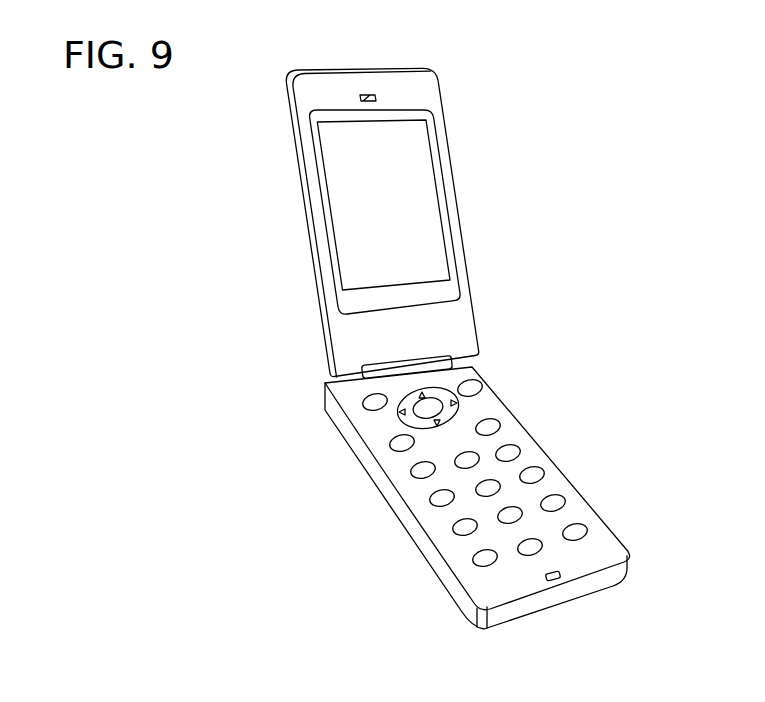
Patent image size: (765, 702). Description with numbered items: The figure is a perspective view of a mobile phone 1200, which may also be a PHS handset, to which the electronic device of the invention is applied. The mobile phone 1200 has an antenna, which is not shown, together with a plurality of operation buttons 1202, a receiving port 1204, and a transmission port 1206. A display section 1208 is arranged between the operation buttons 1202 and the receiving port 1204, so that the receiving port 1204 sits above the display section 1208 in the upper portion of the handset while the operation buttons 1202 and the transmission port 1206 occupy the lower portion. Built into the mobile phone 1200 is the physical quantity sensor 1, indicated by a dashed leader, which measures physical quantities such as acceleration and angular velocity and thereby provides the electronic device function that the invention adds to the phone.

The mobile phone 1200 is at (450, 328).
The physical quantity sensor 1 is at (485, 407).
The operation buttons 1202 is at (540, 475).
The receiving port 1204 is at (369, 93).
The transmission port 1206 is at (560, 573).
The display section 1208 is at (343, 173).